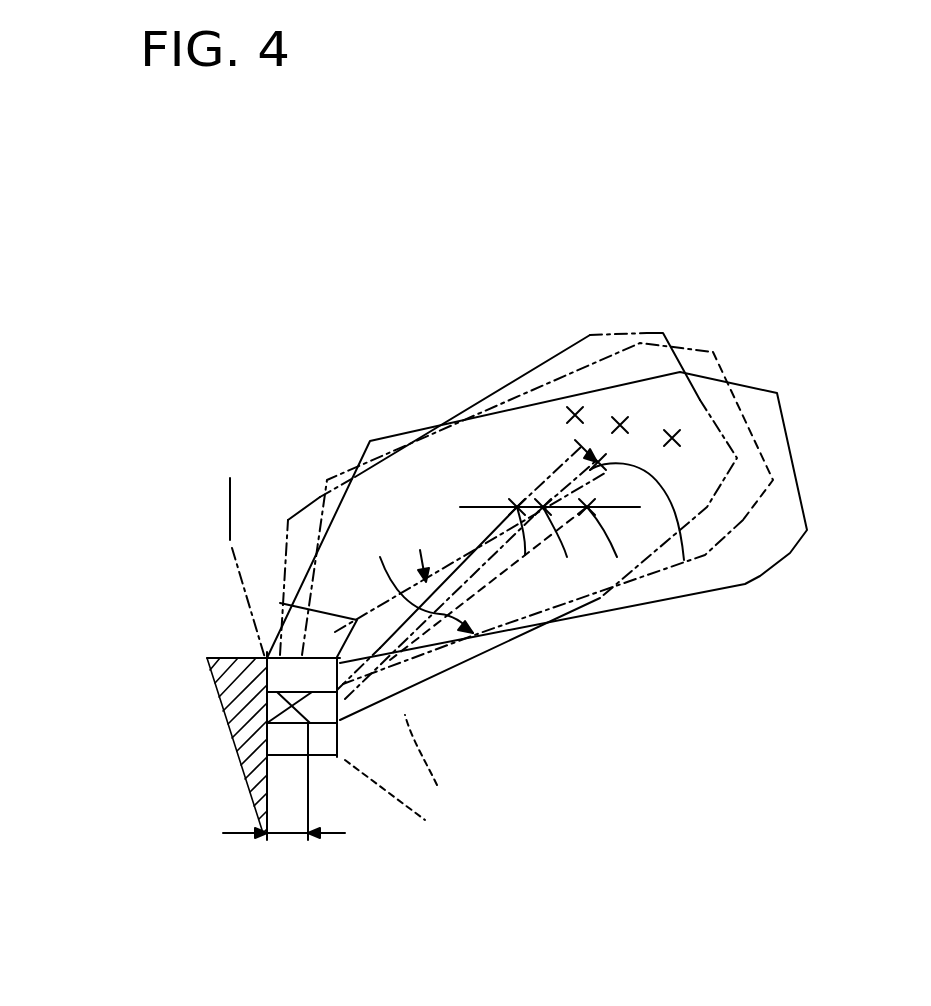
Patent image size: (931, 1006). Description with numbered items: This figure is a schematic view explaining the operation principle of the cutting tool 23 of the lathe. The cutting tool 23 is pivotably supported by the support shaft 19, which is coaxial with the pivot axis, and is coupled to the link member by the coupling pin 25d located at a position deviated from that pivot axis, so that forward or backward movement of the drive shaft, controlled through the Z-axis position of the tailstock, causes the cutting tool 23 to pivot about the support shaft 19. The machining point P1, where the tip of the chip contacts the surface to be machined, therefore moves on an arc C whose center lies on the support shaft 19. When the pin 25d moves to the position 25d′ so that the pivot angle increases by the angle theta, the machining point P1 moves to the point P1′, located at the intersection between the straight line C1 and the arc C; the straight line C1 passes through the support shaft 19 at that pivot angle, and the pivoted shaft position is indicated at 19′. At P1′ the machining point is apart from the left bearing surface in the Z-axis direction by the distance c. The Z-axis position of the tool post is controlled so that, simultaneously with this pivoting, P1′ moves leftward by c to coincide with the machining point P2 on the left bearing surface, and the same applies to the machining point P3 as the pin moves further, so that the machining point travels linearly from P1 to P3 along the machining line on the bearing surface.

The cutting tool 23 is at (412, 432).
The coupling pin 25d is at (672, 436).
The coupling pin position 25d′ is at (620, 423).
The support shaft 19 is at (617, 557).
The support shaft position 19′ is at (567, 557).
The arc C is at (230, 513).
The straight line C1 is at (417, 769).
The machining point P1 is at (263, 658).
The machining point P2 is at (267, 720).
The machining point P3 is at (263, 757).
The machining point P1′ is at (310, 758).
The Z-axis direction distance c is at (280, 837).